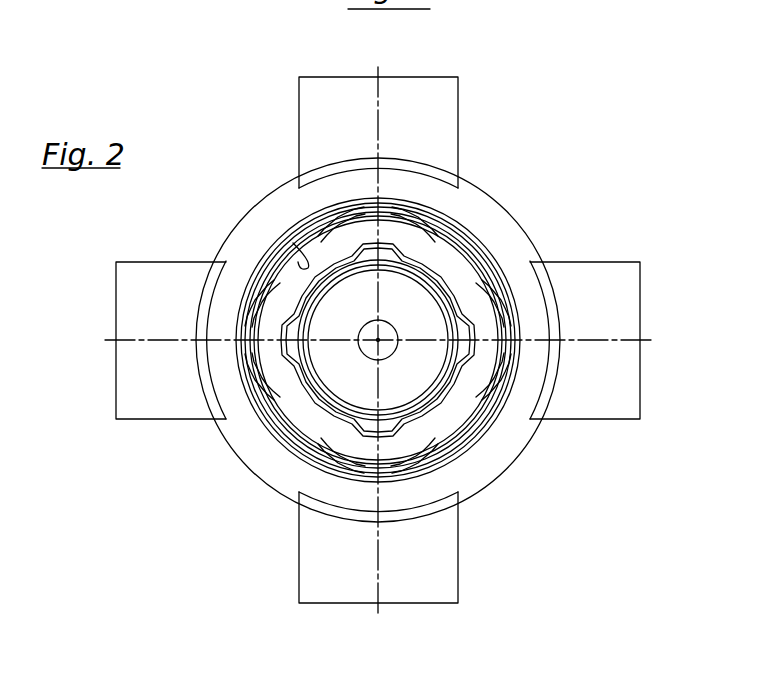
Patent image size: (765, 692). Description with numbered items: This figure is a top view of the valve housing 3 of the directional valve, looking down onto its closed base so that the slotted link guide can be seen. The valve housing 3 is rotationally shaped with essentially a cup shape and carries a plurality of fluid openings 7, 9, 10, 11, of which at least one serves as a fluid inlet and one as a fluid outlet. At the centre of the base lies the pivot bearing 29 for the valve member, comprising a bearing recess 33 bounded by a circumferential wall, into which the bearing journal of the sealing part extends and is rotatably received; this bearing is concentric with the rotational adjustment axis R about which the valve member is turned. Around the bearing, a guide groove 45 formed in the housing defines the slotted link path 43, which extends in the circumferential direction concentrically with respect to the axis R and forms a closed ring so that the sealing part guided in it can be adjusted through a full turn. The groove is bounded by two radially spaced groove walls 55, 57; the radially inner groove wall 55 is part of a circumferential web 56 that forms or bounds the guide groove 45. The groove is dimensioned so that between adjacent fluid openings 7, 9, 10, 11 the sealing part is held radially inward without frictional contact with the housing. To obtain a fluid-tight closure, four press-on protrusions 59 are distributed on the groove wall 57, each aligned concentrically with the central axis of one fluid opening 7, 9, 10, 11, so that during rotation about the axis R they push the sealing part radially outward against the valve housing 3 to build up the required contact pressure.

The valve housing 3 is at (520, 225).
The fluid opening 7 is at (116, 390).
The fluid opening 9 is at (427, 78).
The fluid opening 10 is at (431, 603).
The fluid opening 11 is at (641, 287).
The pivot bearing 29 is at (278, 441).
The bearing recess 33 is at (370, 351).
The slotted link path 43 is at (293, 382).
The guide groove 45 is at (284, 392).
The radially inner groove wall 55 is at (293, 243).
The circumferential web 56 is at (430, 275).
The groove wall 57 is at (465, 275).
The press-on protrusions 59 is at (260, 295).
The rotational adjustment axis R is at (378, 340).